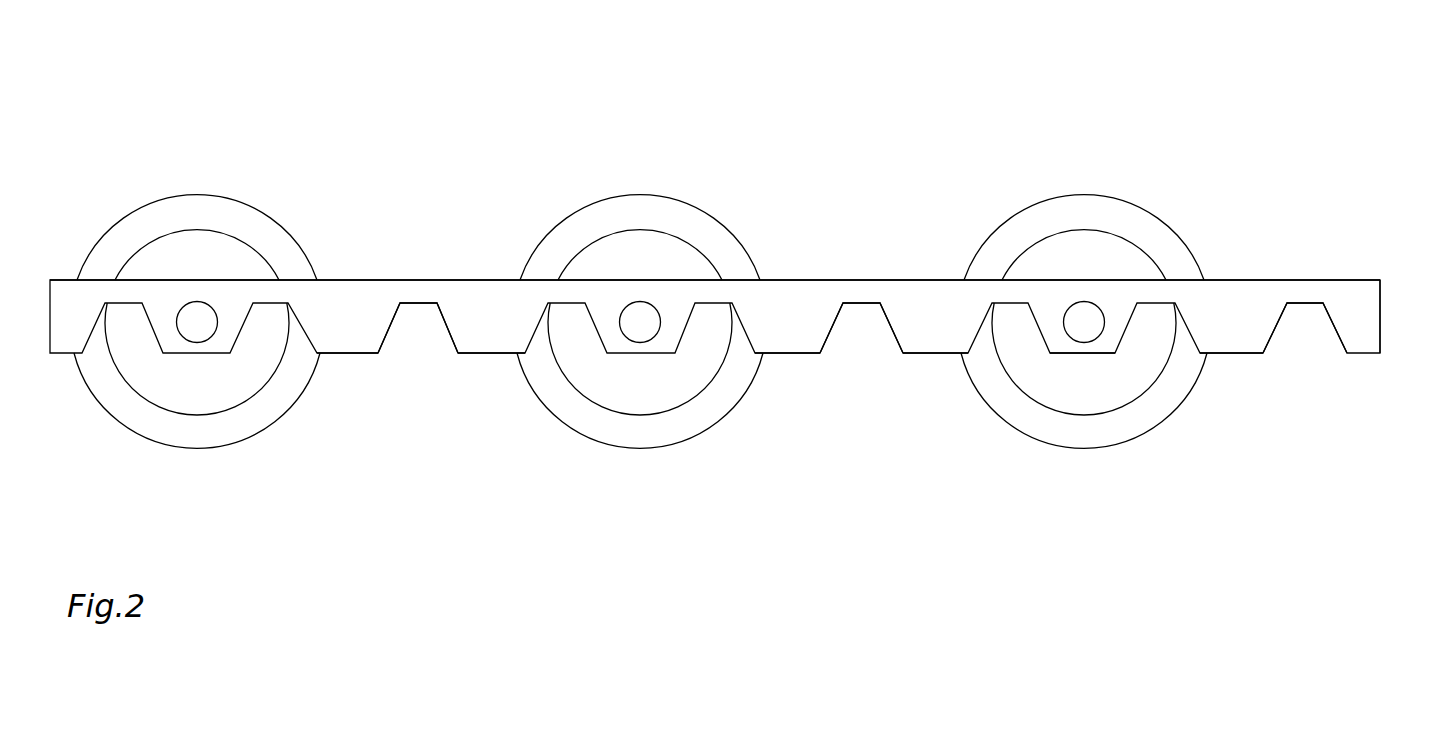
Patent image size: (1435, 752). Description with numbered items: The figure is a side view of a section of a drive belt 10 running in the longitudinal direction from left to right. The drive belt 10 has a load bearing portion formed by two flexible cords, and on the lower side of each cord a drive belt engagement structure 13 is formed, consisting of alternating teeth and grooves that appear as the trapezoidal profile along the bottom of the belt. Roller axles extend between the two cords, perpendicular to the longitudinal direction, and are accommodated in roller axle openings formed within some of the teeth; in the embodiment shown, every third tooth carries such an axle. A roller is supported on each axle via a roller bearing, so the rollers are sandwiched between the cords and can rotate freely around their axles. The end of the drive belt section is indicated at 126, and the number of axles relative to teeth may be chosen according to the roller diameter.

The drive belt 10 is at (1334, 81).
The drive belt engagement structure 13 is at (372, 462).
The end face of carrier plate 126 is at (1365, 295).